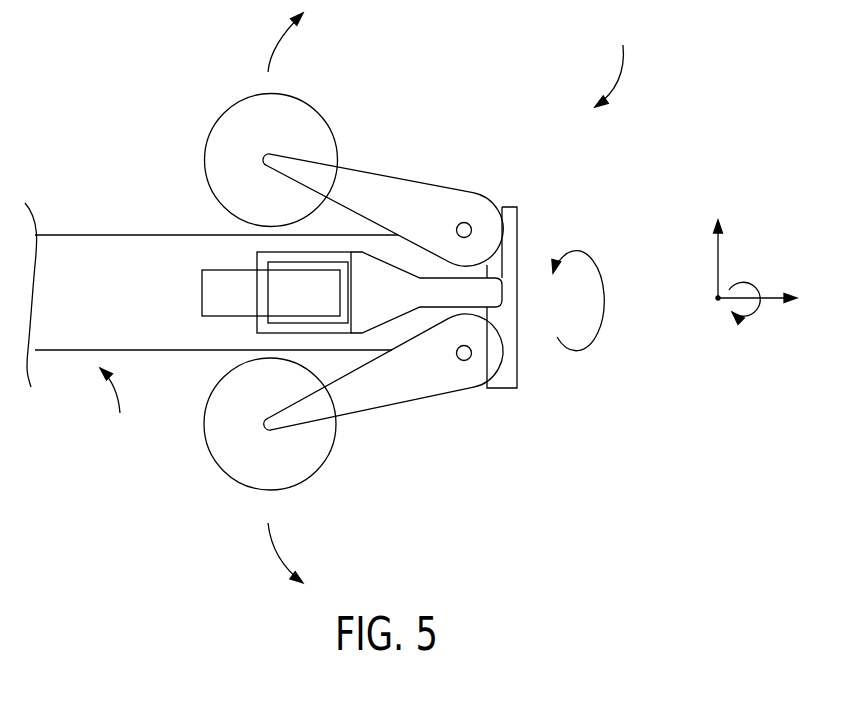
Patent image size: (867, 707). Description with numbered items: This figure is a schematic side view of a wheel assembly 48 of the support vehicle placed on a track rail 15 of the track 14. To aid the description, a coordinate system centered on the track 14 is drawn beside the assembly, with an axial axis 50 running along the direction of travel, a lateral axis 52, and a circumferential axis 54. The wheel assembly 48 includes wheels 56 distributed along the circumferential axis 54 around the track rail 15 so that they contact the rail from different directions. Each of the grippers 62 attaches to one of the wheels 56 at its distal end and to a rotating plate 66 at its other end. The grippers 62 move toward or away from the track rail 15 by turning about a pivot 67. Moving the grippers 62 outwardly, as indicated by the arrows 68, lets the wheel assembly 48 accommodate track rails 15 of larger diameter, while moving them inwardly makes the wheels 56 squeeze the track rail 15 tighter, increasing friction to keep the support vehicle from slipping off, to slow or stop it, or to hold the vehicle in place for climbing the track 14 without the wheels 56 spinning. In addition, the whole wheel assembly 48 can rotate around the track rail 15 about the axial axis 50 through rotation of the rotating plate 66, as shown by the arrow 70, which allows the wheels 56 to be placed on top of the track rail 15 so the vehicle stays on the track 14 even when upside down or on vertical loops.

The track 14 is at (116, 411).
The track rail 15 is at (142, 234).
The wheel assembly 48 is at (616, 62).
The axial axis 50 is at (774, 291).
The lateral axis 52 is at (716, 262).
The circumferential axis 54 is at (757, 313).
The wheels 56 is at (323, 115).
The grippers 62 is at (373, 170).
The rotating plate 66 is at (507, 205).
The pivot 67 is at (456, 229).
The arrows 68 is at (278, 40).
The arrow 70 is at (605, 270).